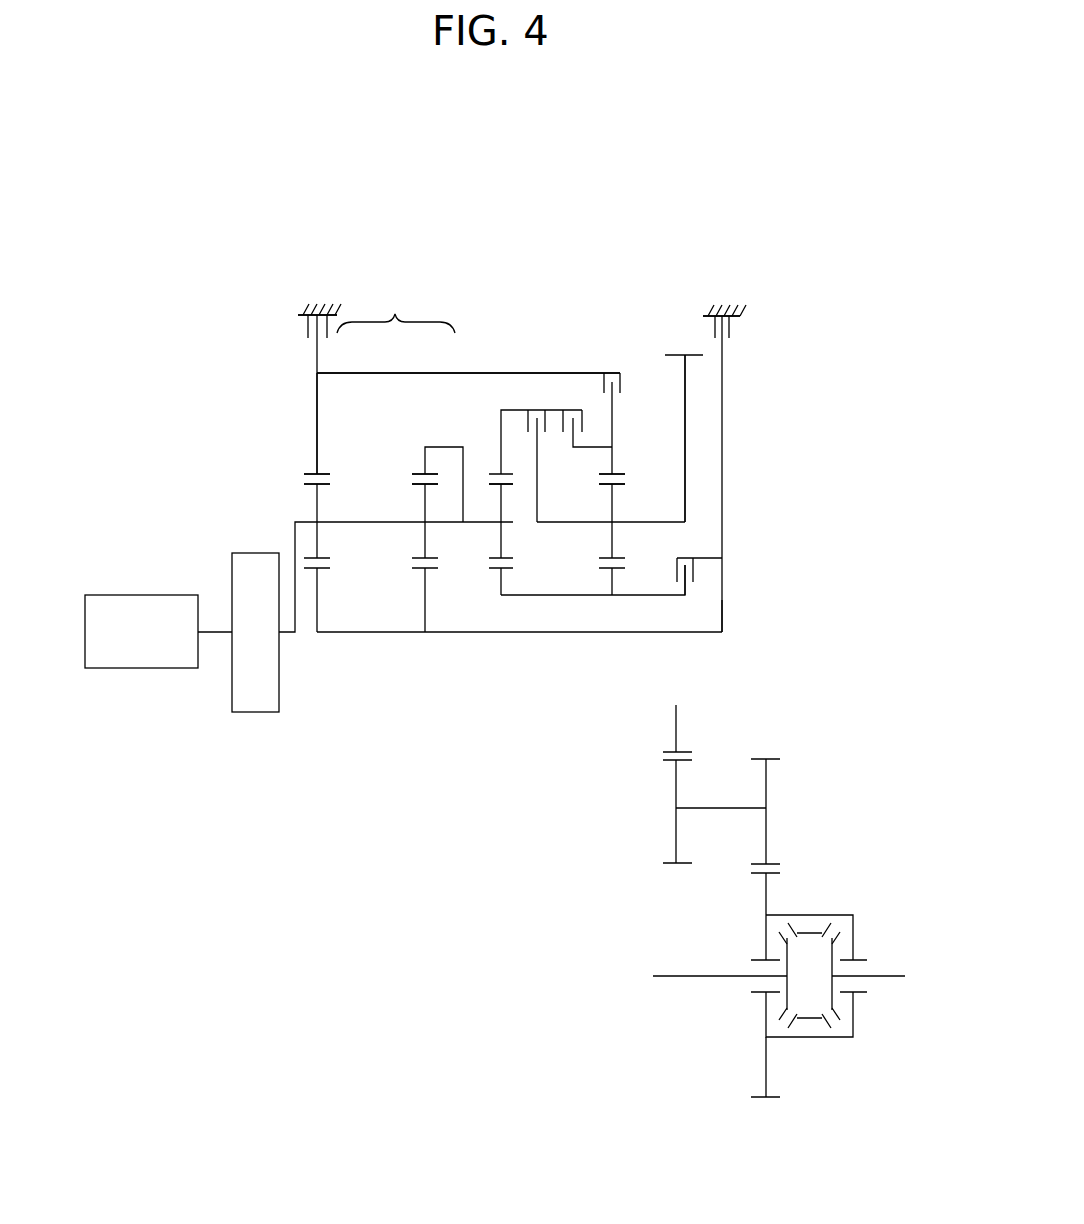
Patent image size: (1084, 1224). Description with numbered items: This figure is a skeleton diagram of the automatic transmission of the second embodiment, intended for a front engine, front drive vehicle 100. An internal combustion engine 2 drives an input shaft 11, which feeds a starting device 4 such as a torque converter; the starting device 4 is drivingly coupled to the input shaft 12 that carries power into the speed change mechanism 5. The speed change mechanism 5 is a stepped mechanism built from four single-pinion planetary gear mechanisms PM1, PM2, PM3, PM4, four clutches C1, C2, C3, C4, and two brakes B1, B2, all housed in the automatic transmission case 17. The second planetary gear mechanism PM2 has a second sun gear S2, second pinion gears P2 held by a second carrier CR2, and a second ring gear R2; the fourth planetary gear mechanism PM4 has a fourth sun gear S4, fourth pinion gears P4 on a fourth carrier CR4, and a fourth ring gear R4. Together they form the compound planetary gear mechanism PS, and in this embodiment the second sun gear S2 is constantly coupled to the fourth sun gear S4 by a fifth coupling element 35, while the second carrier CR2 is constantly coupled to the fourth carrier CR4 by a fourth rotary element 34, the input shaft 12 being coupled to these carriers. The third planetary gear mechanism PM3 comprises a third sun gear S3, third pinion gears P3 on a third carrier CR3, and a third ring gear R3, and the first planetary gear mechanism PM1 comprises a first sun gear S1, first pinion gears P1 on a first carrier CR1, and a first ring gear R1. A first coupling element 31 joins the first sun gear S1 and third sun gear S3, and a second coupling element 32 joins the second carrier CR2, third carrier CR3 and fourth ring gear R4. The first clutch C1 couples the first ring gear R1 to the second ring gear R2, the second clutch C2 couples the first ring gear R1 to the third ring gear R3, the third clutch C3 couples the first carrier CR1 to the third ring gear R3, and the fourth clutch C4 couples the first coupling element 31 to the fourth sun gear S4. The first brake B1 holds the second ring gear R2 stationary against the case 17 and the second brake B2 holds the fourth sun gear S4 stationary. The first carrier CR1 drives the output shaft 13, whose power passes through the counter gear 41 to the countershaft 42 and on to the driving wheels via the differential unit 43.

The vehicle 100 is at (514, 190).
The input shaft 12 is at (236, 272).
The automatic transmission case 17 is at (300, 305).
The first brake B1 is at (319, 376).
The second brake B2 is at (724, 456).
The compound planetary gear mechanism PS is at (468, 326).
The second planetary gear mechanism PM2 is at (322, 446).
The fourth planetary gear mechanism PM4 is at (447, 448).
The third planetary gear mechanism PM3 is at (487, 480).
The first planetary gear mechanism PM1 is at (627, 463).
The second ring gear R2 is at (323, 473).
The second pinion gears P2 is at (305, 485).
The second carrier CR2 is at (319, 524).
The second sun gear S2 is at (323, 572).
The second coupling element 32 is at (437, 447).
The fourth ring gear R4 is at (415, 475).
The fourth pinion gears P4 is at (415, 484).
The fourth carrier CR4 is at (429, 524).
The fourth sun gear S4 is at (424, 575).
The third ring gear R3 is at (494, 470).
The third pinion gears P3 is at (513, 486).
The third carrier CR3 is at (512, 526).
The third sun gear S3 is at (512, 570).
The first clutch C1 is at (611, 410).
The second clutch C2 is at (585, 417).
The third clutch C3 is at (540, 454).
The fourth clutch C4 is at (698, 565).
The first ring gear R1 is at (598, 474).
The first pinion gears P1 is at (598, 486).
The first carrier CR1 is at (614, 524).
The first sun gear S1 is at (606, 572).
The first coupling element 31 is at (566, 598).
The fourth rotary element 34 is at (362, 520).
The fifth coupling element 35 is at (370, 634).
The counter gear 41 is at (684, 352).
The output shaft 13 is at (678, 375).
The internal combustion engine 2 is at (142, 595).
The input shaft 11 is at (217, 628).
The starting device 4 is at (250, 553).
The speed change mechanism 5 is at (747, 597).
The countershaft 42 is at (705, 807).
The differential unit 43 is at (849, 896).